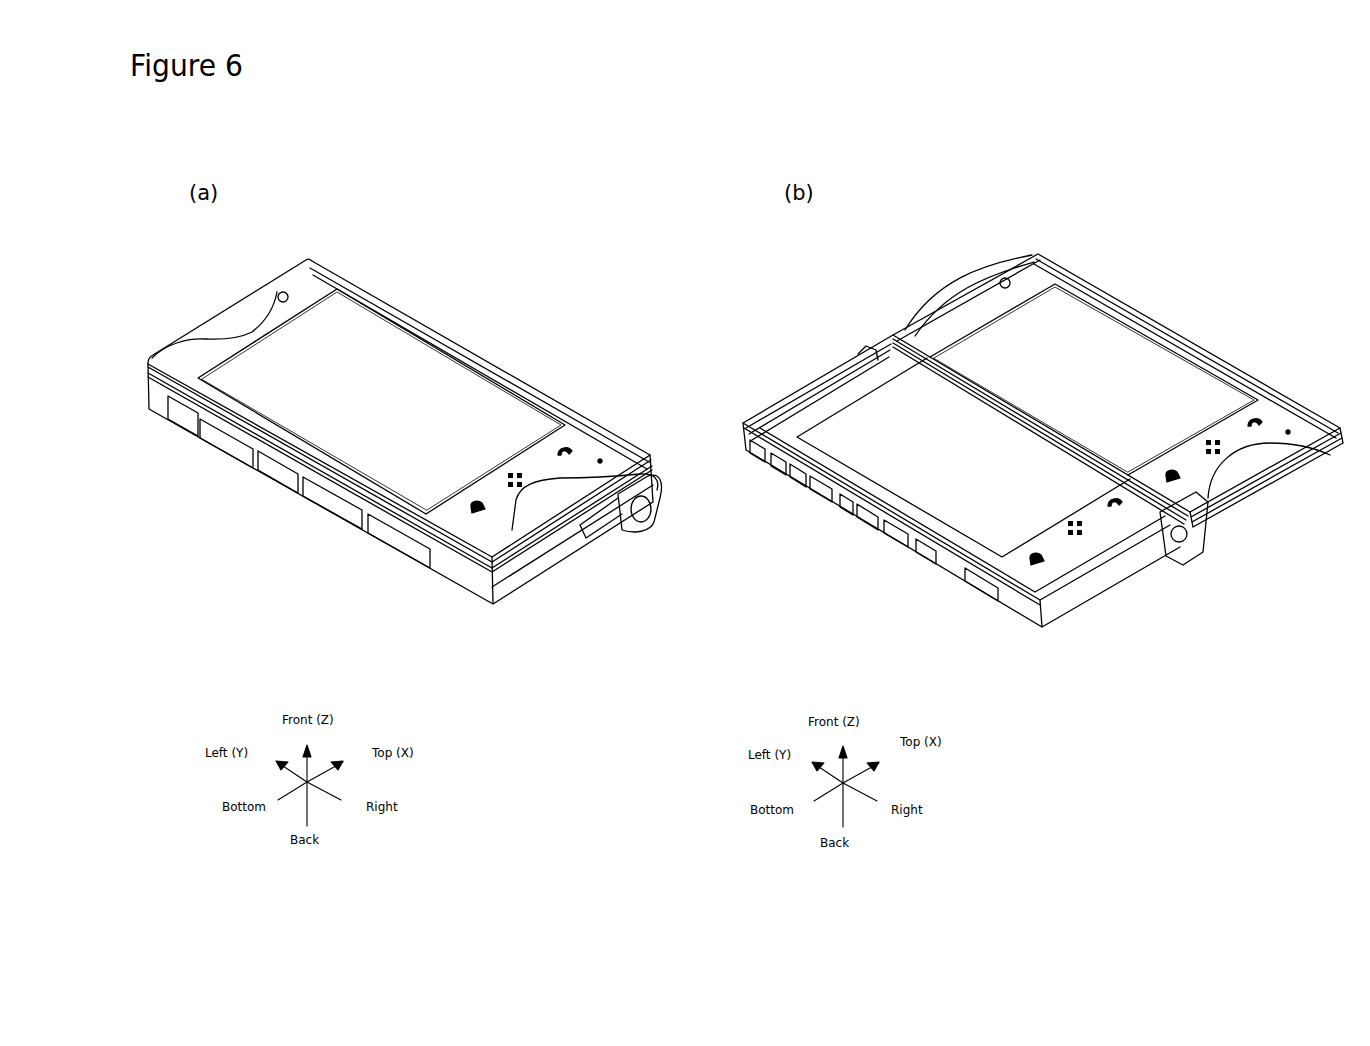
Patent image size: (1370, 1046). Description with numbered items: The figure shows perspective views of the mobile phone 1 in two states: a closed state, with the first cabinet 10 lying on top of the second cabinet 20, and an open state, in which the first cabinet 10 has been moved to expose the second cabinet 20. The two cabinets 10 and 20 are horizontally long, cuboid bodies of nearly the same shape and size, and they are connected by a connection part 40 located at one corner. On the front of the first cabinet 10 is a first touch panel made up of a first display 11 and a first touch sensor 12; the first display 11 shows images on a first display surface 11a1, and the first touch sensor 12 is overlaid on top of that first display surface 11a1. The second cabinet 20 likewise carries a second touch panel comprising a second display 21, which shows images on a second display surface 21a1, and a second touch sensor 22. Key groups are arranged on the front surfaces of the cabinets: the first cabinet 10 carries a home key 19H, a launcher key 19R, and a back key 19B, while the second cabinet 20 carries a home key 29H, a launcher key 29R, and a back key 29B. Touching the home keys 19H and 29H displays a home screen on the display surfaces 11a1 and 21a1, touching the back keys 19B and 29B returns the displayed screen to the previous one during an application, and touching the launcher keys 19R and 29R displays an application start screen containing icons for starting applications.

The mobile phone 1 is at (566, 266).
The first cabinet 10 is at (503, 360).
The first display 11 is at (363, 333).
The first display surface 11a1 is at (338, 297).
The first touch sensor 12 is at (383, 347).
The home key 19H is at (480, 512).
The launcher key 19R is at (517, 480).
The back key 19B is at (568, 458).
The second cabinet 20 is at (612, 532).
The second display 21 is at (877, 405).
The second display surface 21a1 is at (830, 407).
The second touch sensor 22 is at (836, 428).
The home key 29H is at (1037, 567).
The launcher key 29R is at (1082, 535).
The back key 29B is at (1120, 510).
The connection part 40 is at (657, 484).